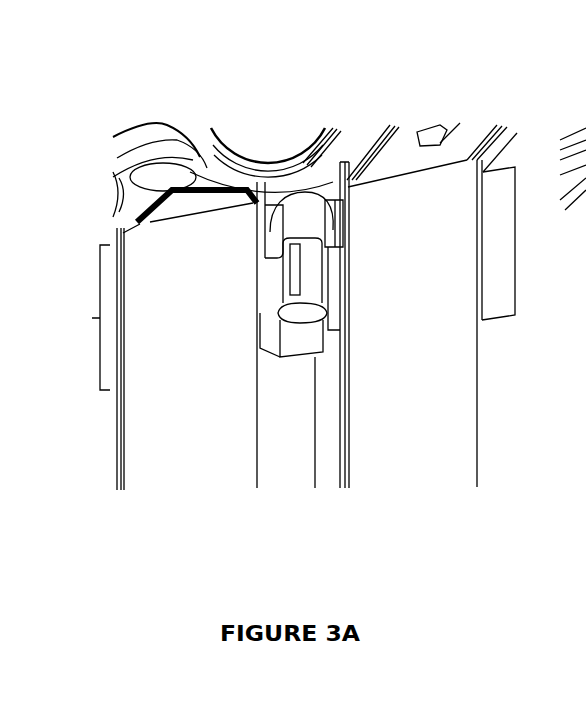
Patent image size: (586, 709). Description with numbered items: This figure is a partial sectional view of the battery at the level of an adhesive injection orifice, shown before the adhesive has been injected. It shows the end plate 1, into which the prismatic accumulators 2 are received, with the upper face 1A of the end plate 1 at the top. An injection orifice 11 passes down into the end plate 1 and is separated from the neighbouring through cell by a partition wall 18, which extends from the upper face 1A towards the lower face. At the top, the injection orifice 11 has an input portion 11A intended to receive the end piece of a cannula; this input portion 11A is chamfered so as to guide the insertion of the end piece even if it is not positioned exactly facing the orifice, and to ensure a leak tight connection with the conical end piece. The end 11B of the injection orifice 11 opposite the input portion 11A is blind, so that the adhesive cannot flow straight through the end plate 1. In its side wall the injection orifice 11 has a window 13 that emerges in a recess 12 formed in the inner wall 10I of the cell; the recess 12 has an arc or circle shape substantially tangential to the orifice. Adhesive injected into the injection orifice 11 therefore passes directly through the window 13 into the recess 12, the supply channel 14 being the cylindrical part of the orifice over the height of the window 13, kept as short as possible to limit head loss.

The end plate 1 is at (90, 317).
The upper face 1A is at (353, 149).
The accumulator 2 is at (197, 153).
The housing 10I is at (266, 231).
The injection orifice 11 is at (308, 204).
The input portion 11A is at (330, 220).
The end 11B is at (305, 313).
The recess 12 is at (267, 332).
The window 13 is at (266, 284).
The supply channel 14 is at (308, 280).
The partition wall 18 is at (273, 231).